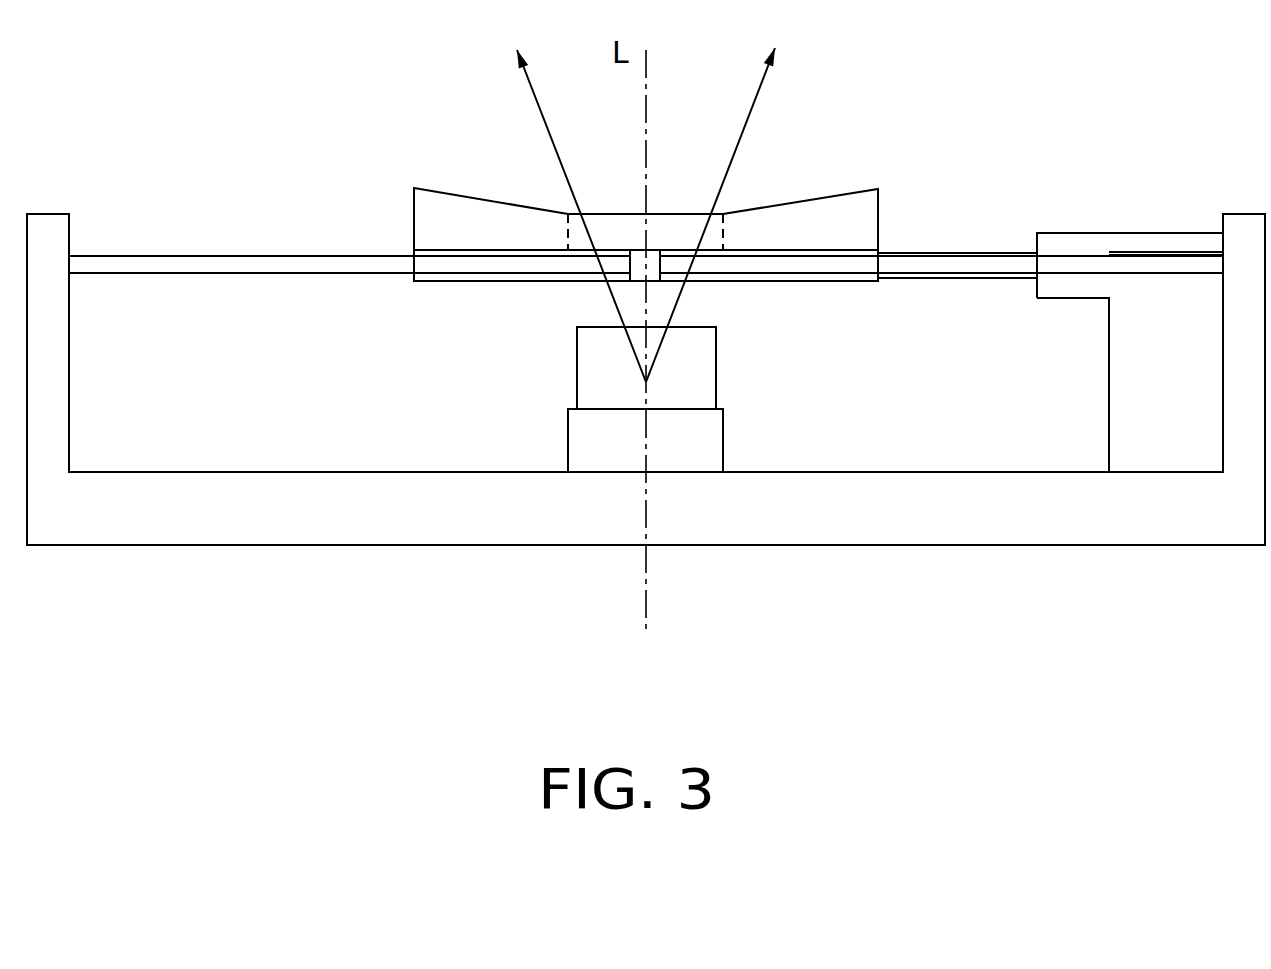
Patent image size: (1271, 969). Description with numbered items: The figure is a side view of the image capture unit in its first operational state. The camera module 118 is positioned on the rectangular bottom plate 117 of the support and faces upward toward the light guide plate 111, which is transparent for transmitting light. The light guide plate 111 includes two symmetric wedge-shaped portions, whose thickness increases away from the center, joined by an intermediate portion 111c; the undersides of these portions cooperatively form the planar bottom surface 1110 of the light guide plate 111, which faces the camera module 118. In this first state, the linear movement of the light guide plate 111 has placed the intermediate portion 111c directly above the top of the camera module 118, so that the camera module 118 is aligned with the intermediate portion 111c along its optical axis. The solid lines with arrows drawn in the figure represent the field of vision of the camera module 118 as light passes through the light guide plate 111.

The light guide plate 111 is at (886, 195).
The intermediate portion 111c is at (677, 217).
The bottom surface 1110 is at (512, 252).
The bottom plate 117 is at (366, 498).
The camera module 118 is at (698, 375).